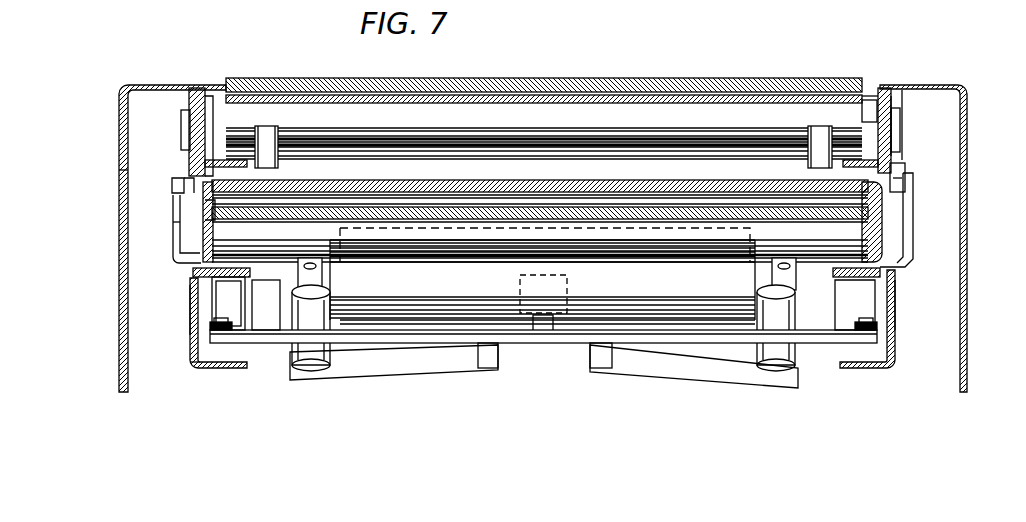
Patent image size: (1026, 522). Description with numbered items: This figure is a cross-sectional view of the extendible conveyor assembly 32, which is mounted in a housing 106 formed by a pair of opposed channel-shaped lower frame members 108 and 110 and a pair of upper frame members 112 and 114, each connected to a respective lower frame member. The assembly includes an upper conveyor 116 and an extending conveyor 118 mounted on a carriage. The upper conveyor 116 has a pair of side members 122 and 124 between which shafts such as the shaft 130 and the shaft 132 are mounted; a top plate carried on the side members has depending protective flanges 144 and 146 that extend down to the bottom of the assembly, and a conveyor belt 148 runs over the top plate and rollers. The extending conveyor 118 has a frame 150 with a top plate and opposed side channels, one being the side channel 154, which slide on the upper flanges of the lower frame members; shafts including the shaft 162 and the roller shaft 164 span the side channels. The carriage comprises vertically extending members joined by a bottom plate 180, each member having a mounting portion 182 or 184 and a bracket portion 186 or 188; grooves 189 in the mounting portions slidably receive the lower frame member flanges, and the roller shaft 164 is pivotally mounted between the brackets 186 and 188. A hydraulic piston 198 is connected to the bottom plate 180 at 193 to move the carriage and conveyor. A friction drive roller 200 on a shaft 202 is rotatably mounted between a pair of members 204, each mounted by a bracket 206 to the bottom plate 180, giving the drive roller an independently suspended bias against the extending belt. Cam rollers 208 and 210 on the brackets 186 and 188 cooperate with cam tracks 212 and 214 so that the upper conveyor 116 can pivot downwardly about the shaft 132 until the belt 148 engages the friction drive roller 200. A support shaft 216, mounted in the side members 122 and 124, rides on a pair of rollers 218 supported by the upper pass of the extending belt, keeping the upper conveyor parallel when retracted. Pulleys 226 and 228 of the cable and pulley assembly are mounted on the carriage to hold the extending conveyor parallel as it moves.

The extendible conveyor assembly 32 is at (968, 70).
The housing 106 is at (197, 381).
The lower frame member 108 is at (190, 348).
The lower frame member 110 is at (895, 354).
The upper frame member 112 is at (183, 310).
The upper frame member 114 is at (896, 340).
The upper conveyor 116 is at (246, 79).
The extending conveyor 118 is at (749, 259).
The side member 122 is at (192, 99).
The side member 124 is at (886, 88).
The shaft 130 is at (893, 105).
The shaft 132 is at (870, 97).
The protective flange 144 is at (119, 174).
The protective flange 146 is at (969, 146).
The conveyor belt 148 is at (690, 95).
The frame 150 is at (189, 170).
The side channel 154 is at (205, 206).
The shaft 162 is at (205, 232).
The roller shaft 164 is at (174, 222).
The bottom plate 180 is at (570, 344).
The mounting portion 182 is at (228, 283).
The mounting portion 184 is at (861, 275).
The bracket portion 186 is at (179, 263).
The bracket portion 188 is at (903, 266).
The groove 189 is at (252, 275).
The piston connection 193 is at (540, 335).
The piston 198 is at (567, 283).
The friction drive roller 200 is at (650, 310).
The shaft 202 is at (330, 278).
The member 204 is at (300, 352).
The bracket 206 is at (430, 372).
The cam roller 208 is at (173, 186).
The cam roller 210 is at (900, 170).
The cam track 212 is at (186, 118).
The cam track 214 is at (900, 132).
The support shaft 216 is at (396, 155).
The roller 218 is at (271, 134).
The pulley 226 is at (220, 332).
The pulley 228 is at (873, 324).